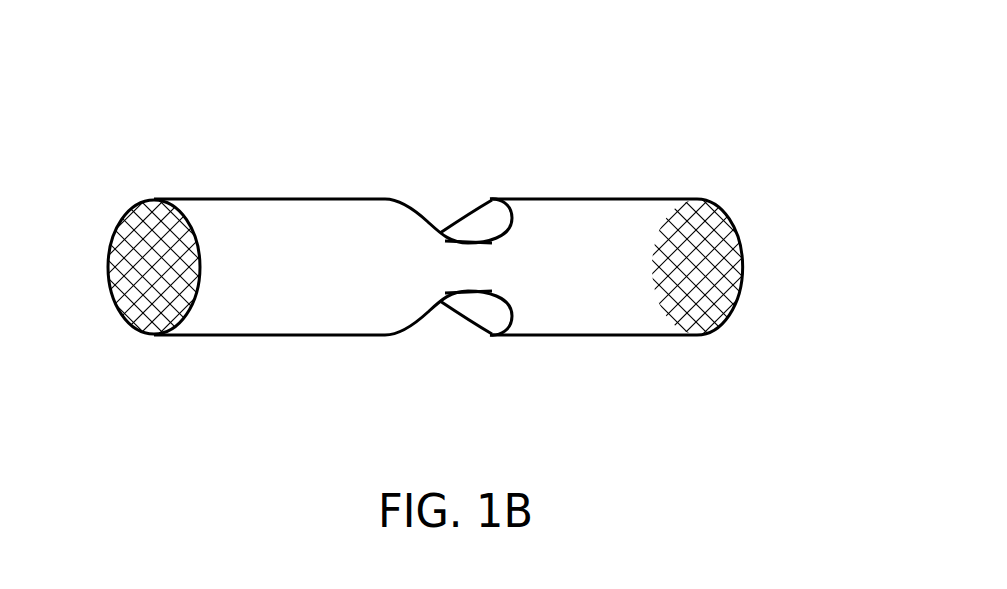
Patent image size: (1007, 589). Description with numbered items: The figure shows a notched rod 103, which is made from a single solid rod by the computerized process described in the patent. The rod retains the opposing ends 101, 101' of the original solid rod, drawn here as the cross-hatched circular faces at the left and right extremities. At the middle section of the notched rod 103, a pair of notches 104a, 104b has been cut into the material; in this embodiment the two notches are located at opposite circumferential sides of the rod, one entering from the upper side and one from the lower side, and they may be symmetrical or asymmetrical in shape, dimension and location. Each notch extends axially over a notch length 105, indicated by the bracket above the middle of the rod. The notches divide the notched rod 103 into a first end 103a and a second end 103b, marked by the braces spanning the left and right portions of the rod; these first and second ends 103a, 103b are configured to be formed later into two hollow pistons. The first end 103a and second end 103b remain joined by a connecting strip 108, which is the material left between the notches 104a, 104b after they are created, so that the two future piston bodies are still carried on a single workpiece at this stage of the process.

The opposing end 101 is at (165, 239).
The opposing end 101' is at (696, 267).
The notched rod 103 is at (554, 68).
The first end of notched rod 103a is at (388, 190).
The second end of notched rod 103b is at (705, 190).
The notch 104a is at (462, 232).
The notch 104b is at (480, 313).
The notch length 105 is at (492, 189).
The connecting strip 108 is at (468, 267).